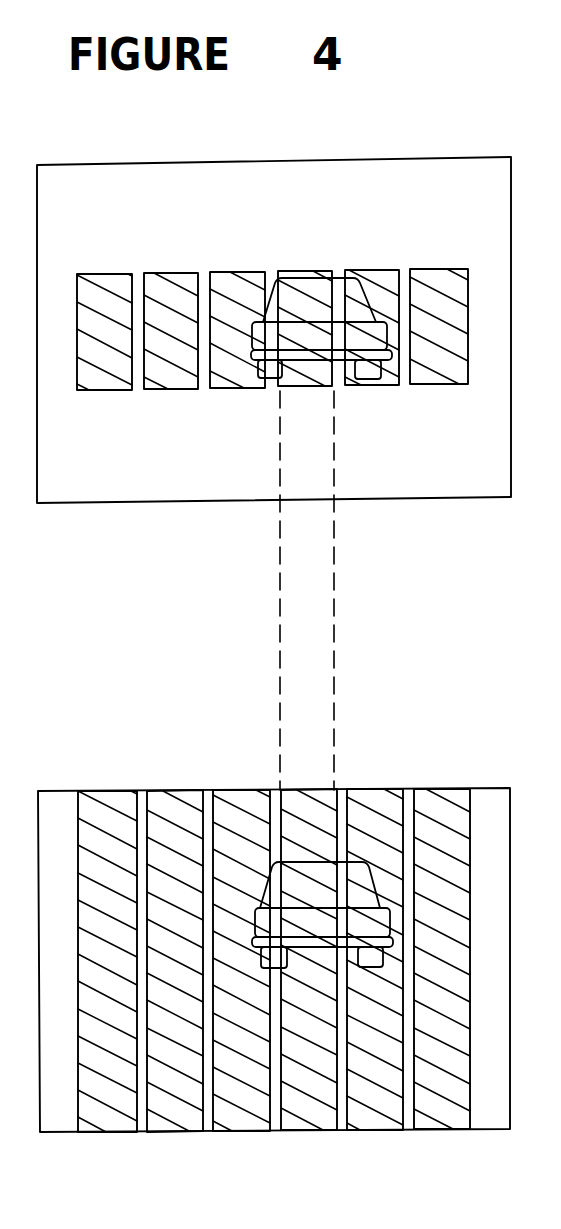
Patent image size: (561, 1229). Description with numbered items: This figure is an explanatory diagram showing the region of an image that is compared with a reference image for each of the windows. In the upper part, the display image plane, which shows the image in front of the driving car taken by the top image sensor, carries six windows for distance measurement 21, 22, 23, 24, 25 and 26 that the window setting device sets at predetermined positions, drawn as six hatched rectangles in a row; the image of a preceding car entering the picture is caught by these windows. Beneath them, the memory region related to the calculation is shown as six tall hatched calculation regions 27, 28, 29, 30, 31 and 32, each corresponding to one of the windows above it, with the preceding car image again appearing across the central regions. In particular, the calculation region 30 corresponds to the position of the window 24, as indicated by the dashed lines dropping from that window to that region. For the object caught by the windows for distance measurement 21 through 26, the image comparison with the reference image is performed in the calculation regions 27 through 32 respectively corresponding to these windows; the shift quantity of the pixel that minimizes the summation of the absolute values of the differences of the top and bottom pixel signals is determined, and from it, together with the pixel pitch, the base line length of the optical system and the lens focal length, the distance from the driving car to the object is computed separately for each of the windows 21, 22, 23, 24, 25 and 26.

The window for distance measurement 21 is at (107, 273).
The window for distance measurement 22 is at (173, 272).
The window for distance measurement 23 is at (241, 271).
The window for distance measurement 24 is at (295, 269).
The window for distance measurement 25 is at (368, 268).
The window for distance measurement 26 is at (430, 267).
The calculation region 27 is at (105, 789).
The calculation region 28 is at (175, 789).
The calculation region 29 is at (247, 789).
The calculation region 30 is at (310, 787).
The calculation region 31 is at (369, 787).
The calculation region 32 is at (440, 787).